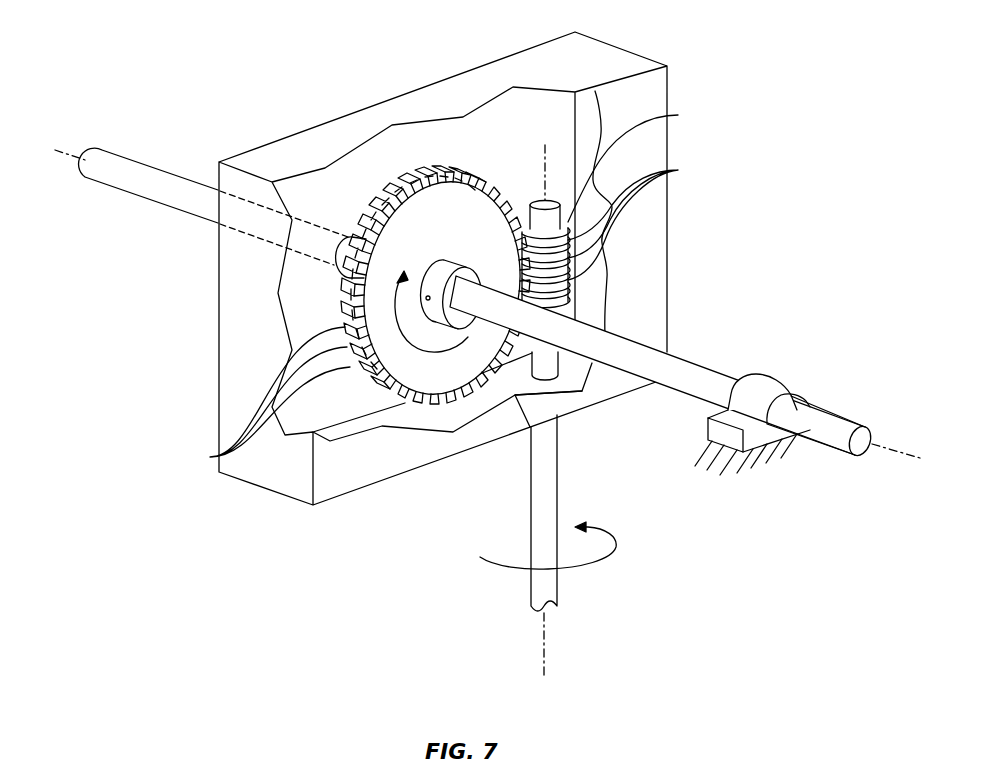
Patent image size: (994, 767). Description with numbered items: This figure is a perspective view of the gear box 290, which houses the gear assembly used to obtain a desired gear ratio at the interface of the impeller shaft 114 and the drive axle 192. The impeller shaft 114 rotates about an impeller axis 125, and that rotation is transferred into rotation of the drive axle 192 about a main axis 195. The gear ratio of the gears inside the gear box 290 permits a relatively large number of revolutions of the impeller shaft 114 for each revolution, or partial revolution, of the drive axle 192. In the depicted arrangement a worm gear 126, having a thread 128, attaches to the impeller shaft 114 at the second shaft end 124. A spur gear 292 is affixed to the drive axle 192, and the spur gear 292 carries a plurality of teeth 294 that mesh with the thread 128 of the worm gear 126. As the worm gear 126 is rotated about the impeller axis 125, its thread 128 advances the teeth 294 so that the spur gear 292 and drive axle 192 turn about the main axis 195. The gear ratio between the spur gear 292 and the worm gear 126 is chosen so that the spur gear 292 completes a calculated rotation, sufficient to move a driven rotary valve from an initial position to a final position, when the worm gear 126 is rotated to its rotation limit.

The gear box 290 is at (585, 42).
The main axis 195 is at (75, 157).
The worm gear 126 is at (646, 163).
The thread 128 is at (646, 219).
The drive axle 192 is at (698, 370).
The second shaft end 124 is at (543, 350).
The spur gear 292 is at (533, 433).
The teeth 294 is at (212, 458).
The impeller shaft 114 is at (543, 501).
The impeller axis 125 is at (543, 640).